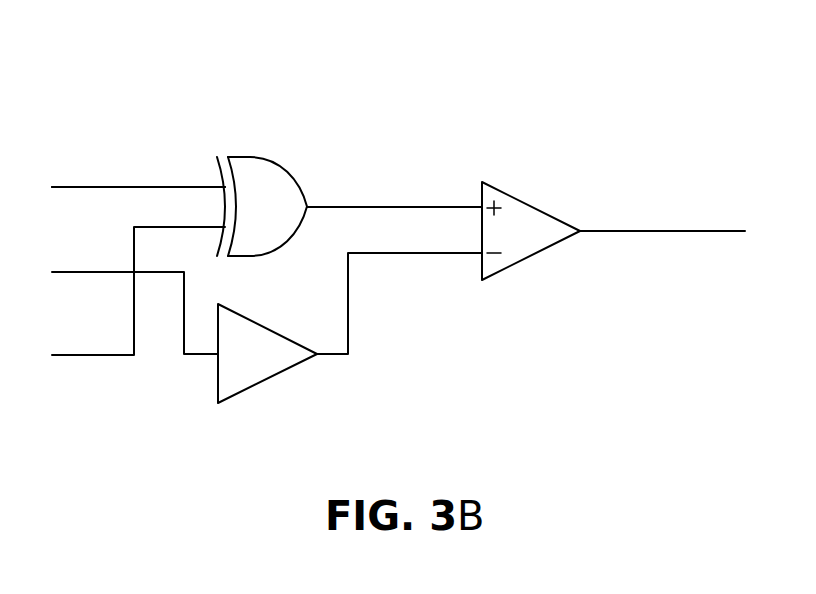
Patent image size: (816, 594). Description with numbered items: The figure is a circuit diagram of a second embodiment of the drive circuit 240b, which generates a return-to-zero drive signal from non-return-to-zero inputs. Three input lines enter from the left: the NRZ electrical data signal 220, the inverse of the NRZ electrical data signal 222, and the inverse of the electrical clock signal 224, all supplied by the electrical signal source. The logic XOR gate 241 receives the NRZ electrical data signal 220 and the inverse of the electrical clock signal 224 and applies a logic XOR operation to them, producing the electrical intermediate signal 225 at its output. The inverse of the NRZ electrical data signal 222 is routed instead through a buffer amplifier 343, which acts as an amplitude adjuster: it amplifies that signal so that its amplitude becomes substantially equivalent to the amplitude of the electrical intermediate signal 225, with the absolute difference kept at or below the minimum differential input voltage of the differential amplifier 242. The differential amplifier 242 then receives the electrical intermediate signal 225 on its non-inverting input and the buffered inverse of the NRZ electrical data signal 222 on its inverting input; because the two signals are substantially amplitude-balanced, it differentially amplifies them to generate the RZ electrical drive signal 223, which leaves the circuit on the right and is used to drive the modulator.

The drive circuit 240b is at (100, 65).
The NRZ electrical data signal 220 is at (92, 186).
The inverse of the NRZ electrical data signal 222 is at (92, 271).
The inverse of the electrical clock signal 224 is at (92, 354).
The logic XOR gate 241 is at (266, 158).
The electrical intermediate signal 225 is at (358, 207).
The buffer amplifier 343 is at (268, 379).
The differential amplifier 242 is at (530, 206).
The RZ electrical drive signal 223 is at (620, 230).